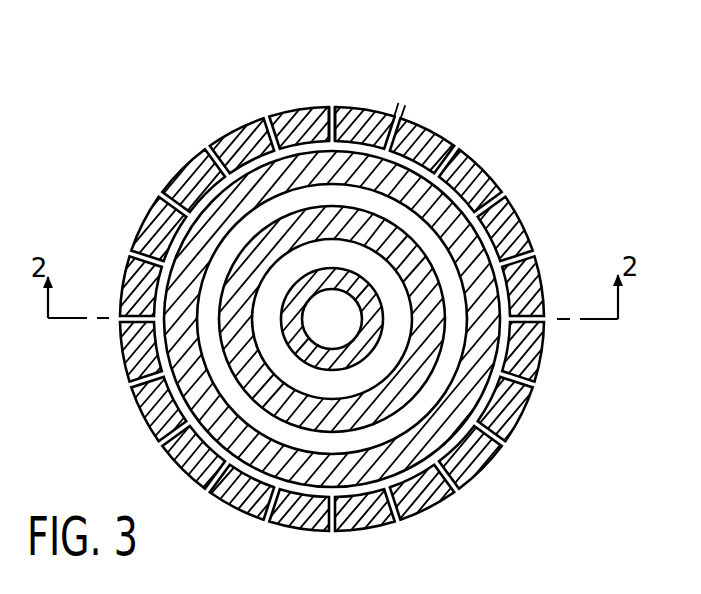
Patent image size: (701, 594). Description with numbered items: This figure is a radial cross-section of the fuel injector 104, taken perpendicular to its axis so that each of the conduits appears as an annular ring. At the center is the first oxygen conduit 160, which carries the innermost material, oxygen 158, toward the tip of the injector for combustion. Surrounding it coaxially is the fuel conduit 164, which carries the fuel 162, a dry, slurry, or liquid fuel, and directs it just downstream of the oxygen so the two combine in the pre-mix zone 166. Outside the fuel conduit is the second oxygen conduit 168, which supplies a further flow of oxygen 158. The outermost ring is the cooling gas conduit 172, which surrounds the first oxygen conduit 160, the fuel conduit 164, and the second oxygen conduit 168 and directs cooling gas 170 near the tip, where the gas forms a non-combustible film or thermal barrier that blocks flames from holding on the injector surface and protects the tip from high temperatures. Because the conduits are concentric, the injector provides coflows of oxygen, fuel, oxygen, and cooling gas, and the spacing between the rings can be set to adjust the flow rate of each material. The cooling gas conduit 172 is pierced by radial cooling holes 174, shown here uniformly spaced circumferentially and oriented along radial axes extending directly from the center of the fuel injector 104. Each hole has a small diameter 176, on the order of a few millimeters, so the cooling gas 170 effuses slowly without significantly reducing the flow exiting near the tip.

The fuel injector 104 is at (355, 302).
The oxygen 158 is at (330, 330).
The first oxygen conduit 160 is at (285, 316).
The fuel 162 is at (376, 383).
The fuel conduit 164 is at (247, 257).
The pre-mix zone 166 is at (444, 384).
The second oxygen conduit 168 is at (227, 202).
The cooling gas 170 is at (517, 356).
The cooling gas conduit 172 is at (296, 122).
The cooling holes 174 is at (333, 100).
The diameter 176 is at (367, 99).